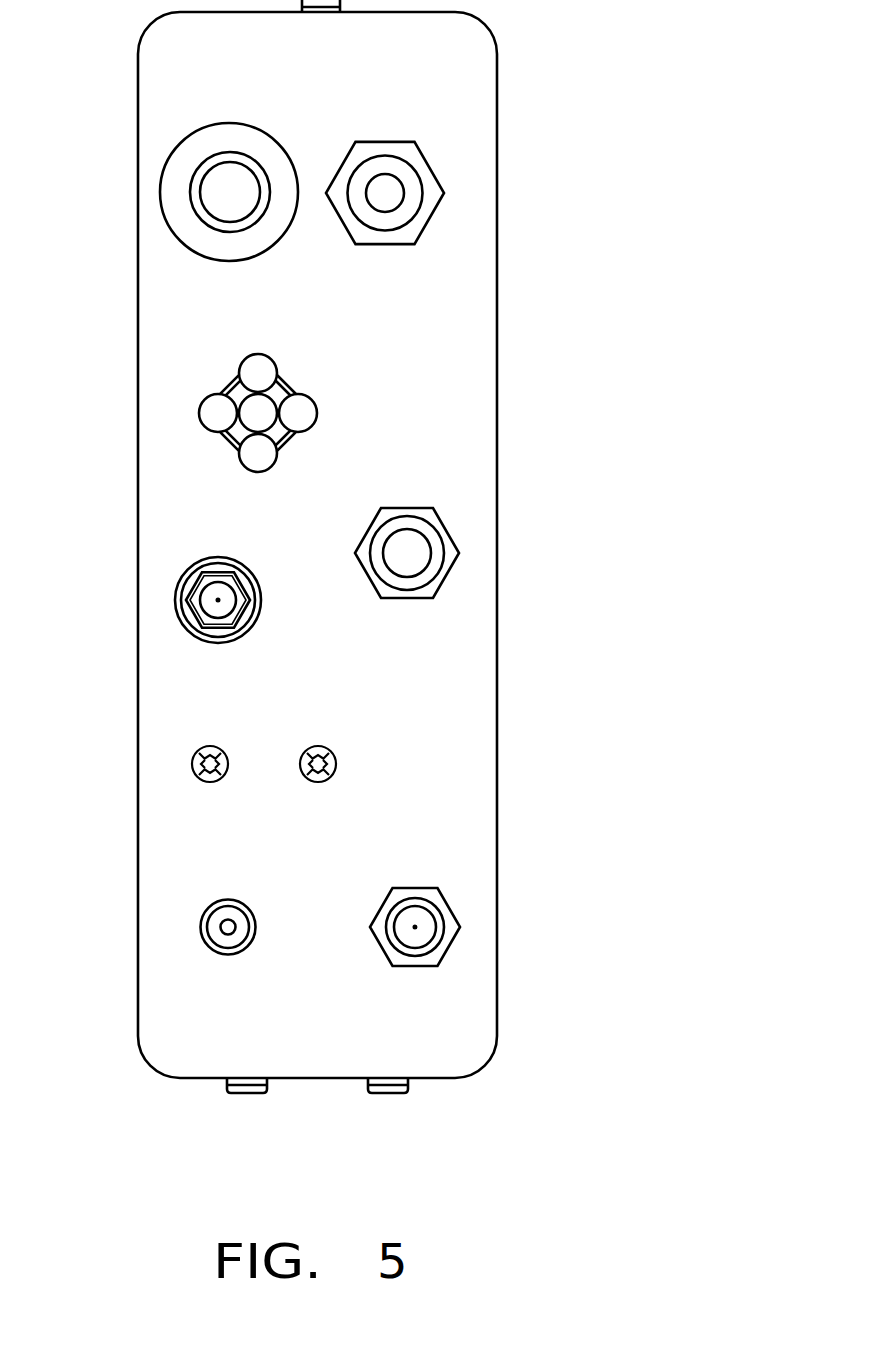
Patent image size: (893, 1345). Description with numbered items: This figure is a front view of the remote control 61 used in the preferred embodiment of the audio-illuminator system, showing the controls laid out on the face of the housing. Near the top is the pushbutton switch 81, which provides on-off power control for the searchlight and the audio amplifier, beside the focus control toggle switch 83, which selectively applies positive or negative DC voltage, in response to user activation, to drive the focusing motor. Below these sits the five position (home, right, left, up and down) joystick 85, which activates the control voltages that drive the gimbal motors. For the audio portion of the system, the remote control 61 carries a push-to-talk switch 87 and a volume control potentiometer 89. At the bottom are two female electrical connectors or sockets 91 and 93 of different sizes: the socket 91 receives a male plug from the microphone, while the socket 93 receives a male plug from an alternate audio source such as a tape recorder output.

The remote control 61 is at (140, 197).
The focus control toggle switch 83 is at (205, 163).
The pushbutton switch 81 is at (417, 172).
The joystick 85 is at (227, 380).
The volume control potentiometer 89 is at (177, 589).
The push-to-talk switch 87 is at (430, 560).
The socket 93 is at (200, 928).
The socket 91 is at (443, 935).